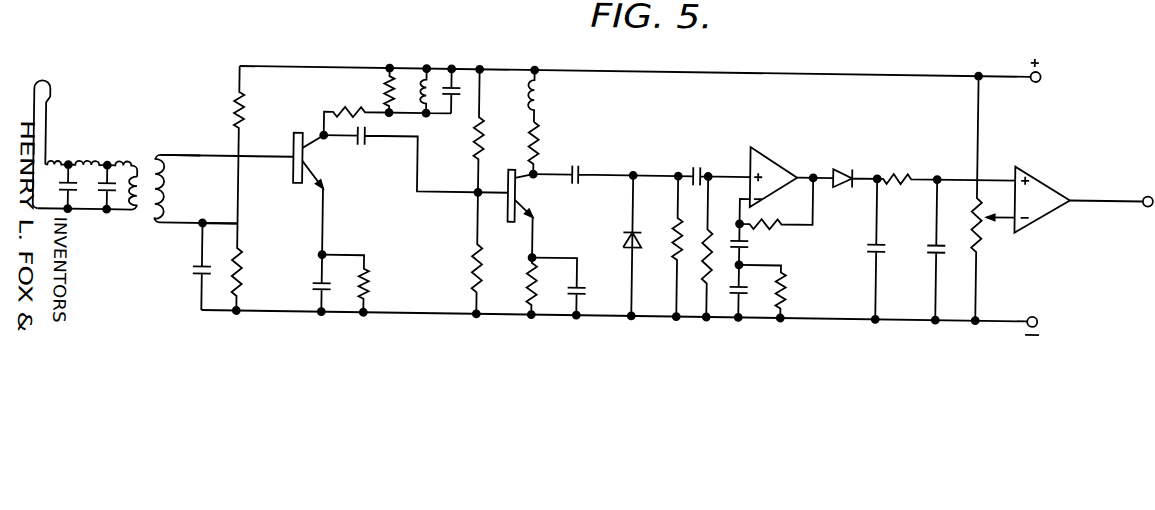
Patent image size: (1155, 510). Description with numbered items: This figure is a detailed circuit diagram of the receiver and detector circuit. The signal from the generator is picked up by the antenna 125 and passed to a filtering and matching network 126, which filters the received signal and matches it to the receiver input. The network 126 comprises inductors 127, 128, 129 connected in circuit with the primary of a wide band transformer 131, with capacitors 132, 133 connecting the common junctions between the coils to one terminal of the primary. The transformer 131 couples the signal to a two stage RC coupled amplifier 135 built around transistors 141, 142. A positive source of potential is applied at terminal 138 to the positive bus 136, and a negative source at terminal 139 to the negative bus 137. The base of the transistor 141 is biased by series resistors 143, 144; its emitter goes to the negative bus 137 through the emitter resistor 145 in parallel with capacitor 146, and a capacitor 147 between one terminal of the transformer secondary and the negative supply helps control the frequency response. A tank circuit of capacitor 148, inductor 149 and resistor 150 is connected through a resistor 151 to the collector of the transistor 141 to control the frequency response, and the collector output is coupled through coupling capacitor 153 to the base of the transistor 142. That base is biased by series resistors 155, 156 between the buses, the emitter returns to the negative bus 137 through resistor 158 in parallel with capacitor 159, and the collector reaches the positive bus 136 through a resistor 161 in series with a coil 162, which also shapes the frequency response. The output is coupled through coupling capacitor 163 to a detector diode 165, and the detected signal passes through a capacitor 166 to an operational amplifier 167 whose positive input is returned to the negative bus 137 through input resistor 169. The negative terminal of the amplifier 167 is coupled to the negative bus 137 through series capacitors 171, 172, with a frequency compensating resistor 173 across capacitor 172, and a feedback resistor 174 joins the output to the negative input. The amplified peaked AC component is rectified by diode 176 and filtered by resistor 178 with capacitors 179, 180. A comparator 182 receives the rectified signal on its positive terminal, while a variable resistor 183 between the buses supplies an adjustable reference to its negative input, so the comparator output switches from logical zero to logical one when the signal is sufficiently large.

The antenna 125 is at (49, 93).
The filtering and matching network 126 is at (182, 84).
The inductor 127 is at (54, 167).
The inductor 128 is at (89, 167).
The inductor 129 is at (122, 168).
The transformer 131 is at (143, 232).
The capacitor 132 is at (74, 218).
The capacitor 133 is at (114, 218).
The two stage amplifier 135 is at (434, 238).
The positive bus 136 is at (256, 71).
The negative bus 137 is at (283, 316).
The terminal 138 is at (1036, 78).
The terminal 139 is at (1030, 311).
The transistor 141 is at (310, 154).
The transistor 142 is at (523, 194).
The resistor 143 is at (246, 108).
The resistor 144 is at (245, 274).
The emitter resistor 145 is at (370, 286).
The capacitor 146 is at (328, 280).
The capacitor 147 is at (194, 280).
The capacitor 148 is at (454, 90).
The inductor 149 is at (424, 93).
The resistor 150 is at (386, 88).
The resistor 151 is at (347, 112).
The coupling capacitor 153 is at (370, 148).
The resistor 155 is at (482, 132).
The resistor 156 is at (472, 271).
The resistor 158 is at (538, 302).
The capacitor 159 is at (584, 284).
The resistor 161 is at (538, 152).
The coil 162 is at (540, 86).
The coupling capacitor 163 is at (580, 174).
The detector diode 165 is at (628, 238).
The capacitor 166 is at (699, 163).
The operational amplifier 167 is at (766, 152).
The input resistor 169 is at (706, 296).
The capacitor 171 is at (746, 246).
The capacitor 172 is at (744, 294).
The frequency compensating resistor 173 is at (788, 294).
The feedback resistor 174 is at (794, 226).
The diode 176 is at (839, 166).
The resistor 178 is at (904, 169).
The capacitor 179 is at (880, 239).
The capacitor 180 is at (932, 254).
The comparator 182 is at (1038, 174).
The variable resistor 183 is at (986, 234).